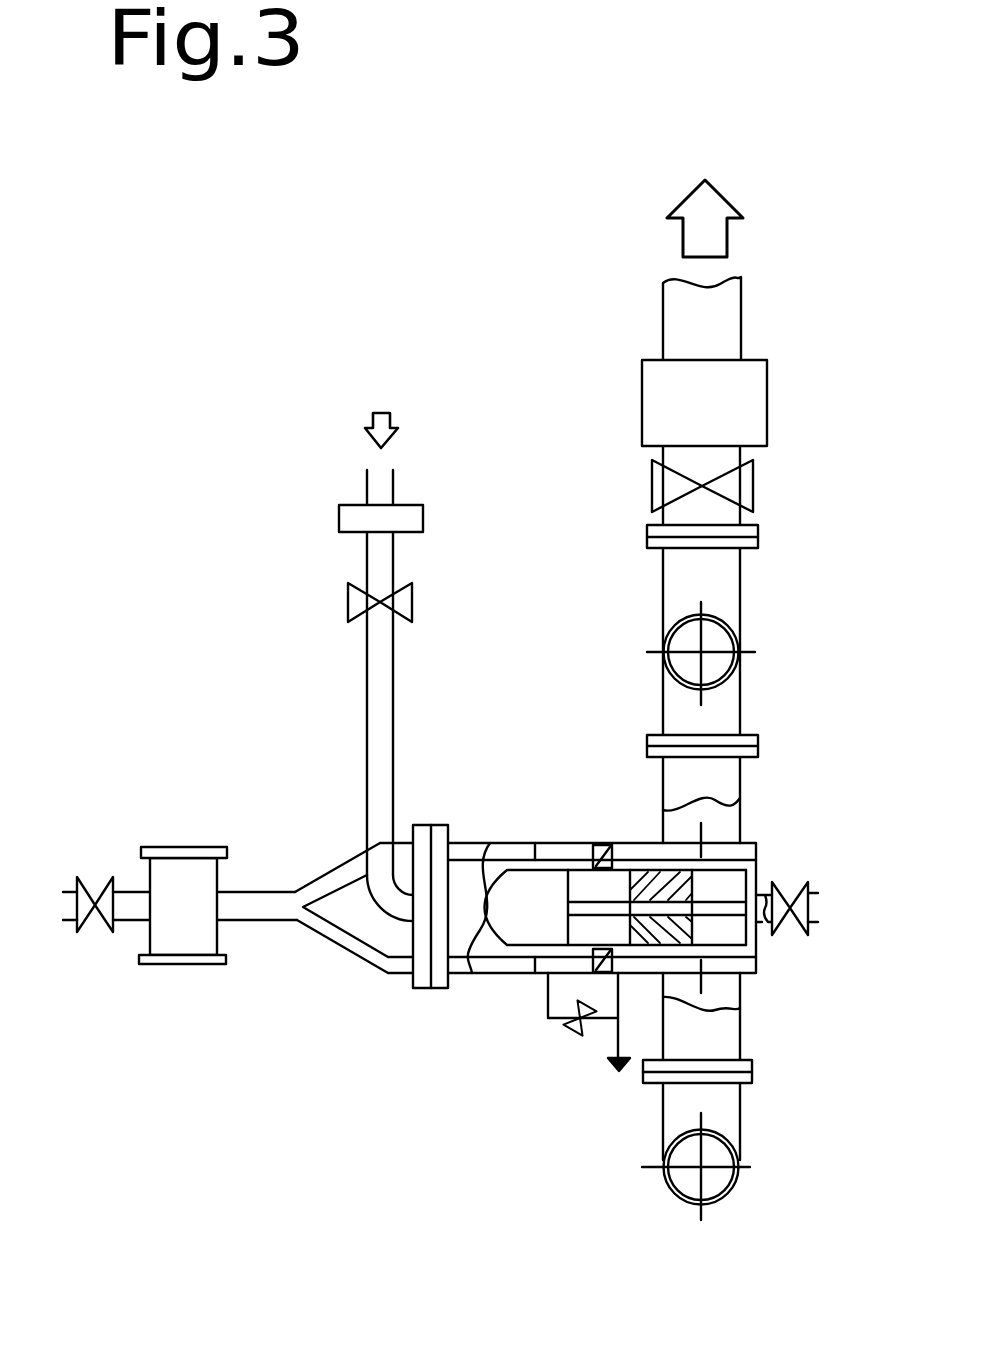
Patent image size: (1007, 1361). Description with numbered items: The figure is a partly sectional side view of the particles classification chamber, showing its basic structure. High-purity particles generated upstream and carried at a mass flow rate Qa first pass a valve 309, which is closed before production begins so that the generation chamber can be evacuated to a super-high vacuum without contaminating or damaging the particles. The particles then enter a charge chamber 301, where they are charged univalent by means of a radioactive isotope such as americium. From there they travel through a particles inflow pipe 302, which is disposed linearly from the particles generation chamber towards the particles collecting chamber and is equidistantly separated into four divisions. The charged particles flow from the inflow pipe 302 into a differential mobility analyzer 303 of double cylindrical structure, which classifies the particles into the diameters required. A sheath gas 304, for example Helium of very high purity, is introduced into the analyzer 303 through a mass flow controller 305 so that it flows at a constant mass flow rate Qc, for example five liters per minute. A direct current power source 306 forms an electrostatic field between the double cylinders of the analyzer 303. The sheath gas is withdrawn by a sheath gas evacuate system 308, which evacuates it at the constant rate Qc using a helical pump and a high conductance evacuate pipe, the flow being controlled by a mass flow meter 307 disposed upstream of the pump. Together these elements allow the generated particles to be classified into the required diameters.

The charge chamber 301 is at (182, 917).
The particles inflow pipe 302 is at (333, 883).
The differential mobility analyzer 303 is at (484, 880).
The sheath gas 304 is at (382, 413).
The mass flow controller 305 is at (363, 520).
The direct current power source 306 is at (580, 1023).
The mass flow meter 307 is at (667, 410).
The sheath gas evacuate system 308 is at (703, 220).
The valve 309 is at (82, 877).